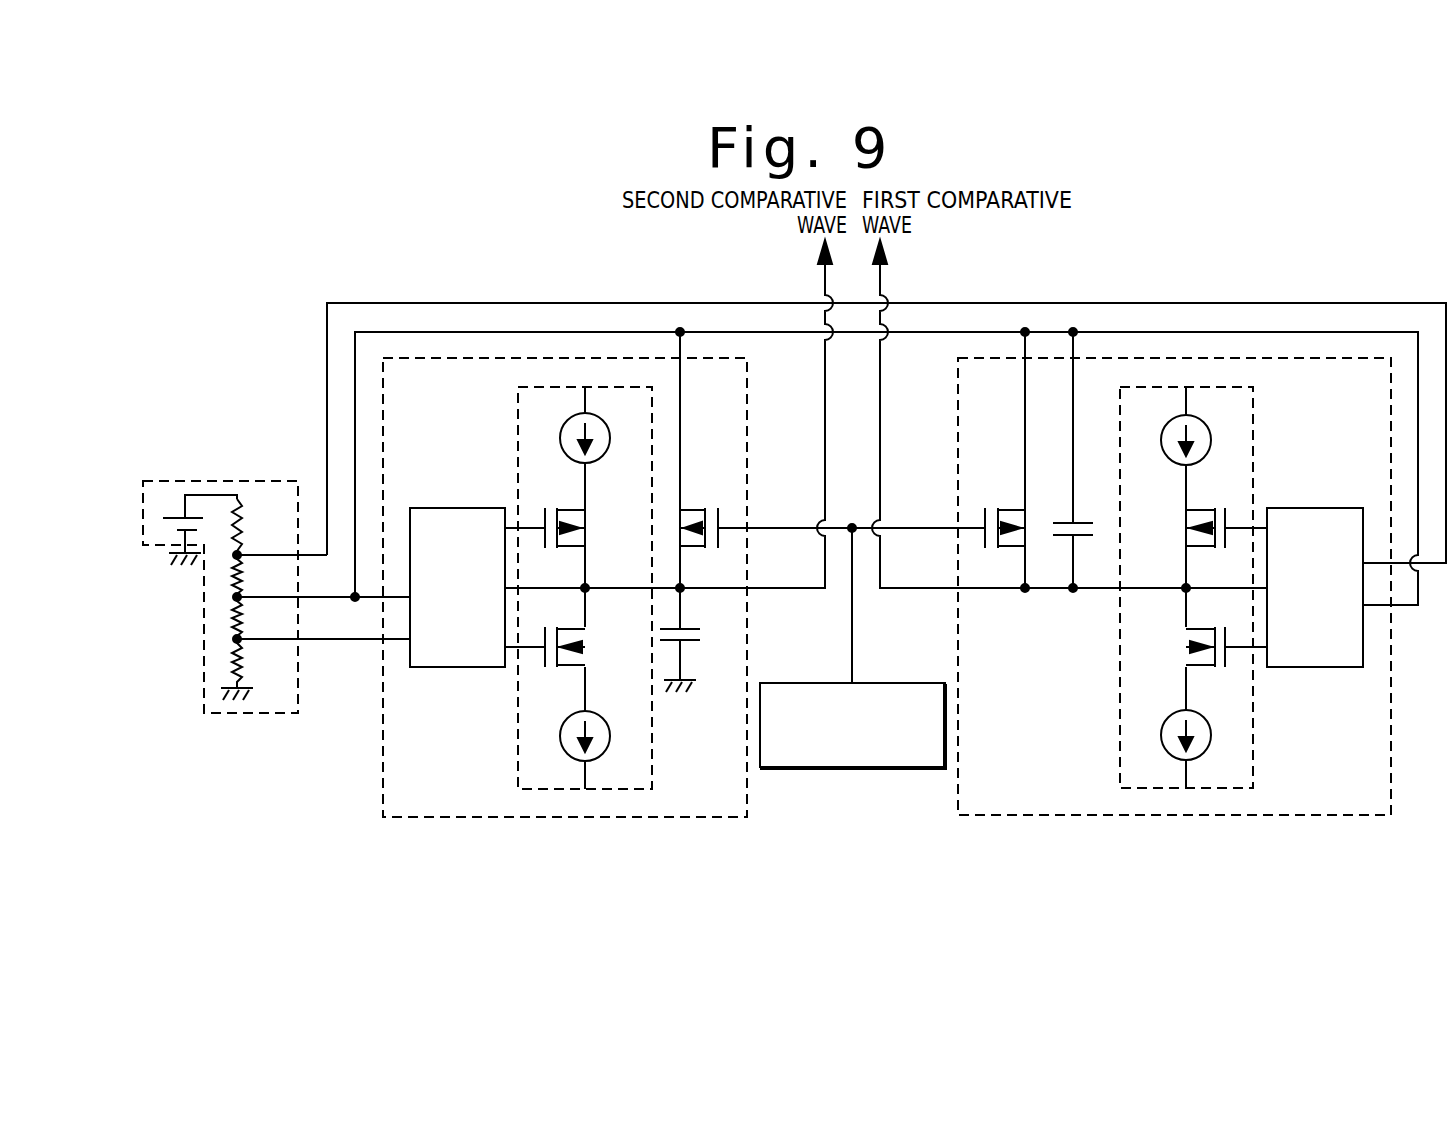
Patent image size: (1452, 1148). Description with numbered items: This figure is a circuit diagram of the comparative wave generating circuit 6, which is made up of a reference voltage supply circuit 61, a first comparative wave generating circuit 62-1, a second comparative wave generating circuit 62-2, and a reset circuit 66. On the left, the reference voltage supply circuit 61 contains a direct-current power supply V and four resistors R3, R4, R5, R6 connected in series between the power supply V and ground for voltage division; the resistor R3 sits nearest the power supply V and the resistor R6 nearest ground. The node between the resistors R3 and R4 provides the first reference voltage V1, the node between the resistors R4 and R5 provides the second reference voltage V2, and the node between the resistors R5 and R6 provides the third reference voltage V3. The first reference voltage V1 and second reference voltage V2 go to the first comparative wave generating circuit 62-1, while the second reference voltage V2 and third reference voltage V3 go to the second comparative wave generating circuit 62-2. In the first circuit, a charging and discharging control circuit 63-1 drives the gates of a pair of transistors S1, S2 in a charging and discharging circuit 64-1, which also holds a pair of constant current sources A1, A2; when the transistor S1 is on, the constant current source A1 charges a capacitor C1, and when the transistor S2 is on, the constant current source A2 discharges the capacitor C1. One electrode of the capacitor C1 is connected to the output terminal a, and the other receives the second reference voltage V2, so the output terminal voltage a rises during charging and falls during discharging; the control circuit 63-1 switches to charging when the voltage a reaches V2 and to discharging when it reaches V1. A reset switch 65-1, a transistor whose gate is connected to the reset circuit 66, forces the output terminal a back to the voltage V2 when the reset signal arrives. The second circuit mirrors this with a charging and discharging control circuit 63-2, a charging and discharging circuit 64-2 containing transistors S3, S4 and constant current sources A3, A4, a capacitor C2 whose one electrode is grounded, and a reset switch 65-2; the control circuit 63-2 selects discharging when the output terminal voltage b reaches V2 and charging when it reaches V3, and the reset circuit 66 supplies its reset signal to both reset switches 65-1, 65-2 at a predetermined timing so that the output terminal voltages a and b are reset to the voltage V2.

The comparative wave generating circuit 6 is at (1198, 206).
The reference voltage supply circuit 61 is at (204, 481).
The direct-current power supply V is at (163, 516).
The resistor R3 is at (232, 537).
The resistor R4 is at (232, 580).
The resistor R5 is at (232, 622).
The resistor R6 is at (232, 670).
The first reference voltage V1 is at (244, 552).
The second reference voltage V2 is at (244, 594).
The third reference voltage V3 is at (244, 636).
The first comparative wave generating circuit 62-1 is at (1313, 815).
The second comparative wave generating circuit 62-2 is at (460, 817).
The charging and discharging control circuit 63-1 is at (1294, 587).
The charging and discharging control circuit 63-2 is at (477, 587).
The charging and discharging circuit 64-1 is at (1253, 480).
The charging and discharging circuit 64-2 is at (518, 480).
The reset switch 65-1 is at (1003, 508).
The reset switch 65-2 is at (705, 508).
The reset circuit 66 is at (852, 768).
The constant current source A1 is at (1211, 440).
The constant current source A2 is at (1211, 735).
The constant current source A3 is at (560, 438).
The constant current source A4 is at (560, 736).
The transistor S1 is at (1200, 537).
The transistor S2 is at (1200, 655).
The transistor S3 is at (575, 533).
The transistor S4 is at (565, 652).
The capacitor C1 is at (1084, 460).
The capacitor C2 is at (699, 640).
The output terminal a is at (1073, 592).
The output terminal b is at (683, 590).